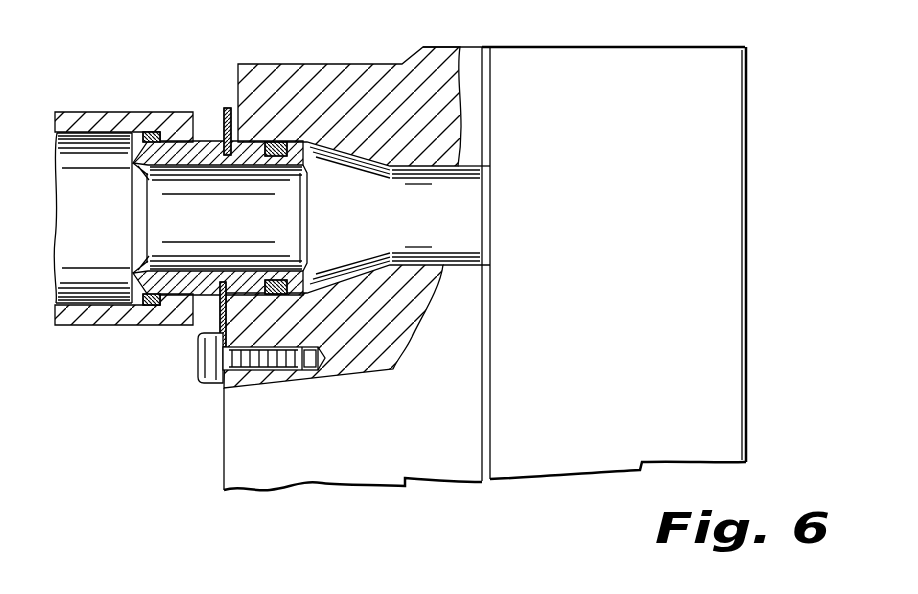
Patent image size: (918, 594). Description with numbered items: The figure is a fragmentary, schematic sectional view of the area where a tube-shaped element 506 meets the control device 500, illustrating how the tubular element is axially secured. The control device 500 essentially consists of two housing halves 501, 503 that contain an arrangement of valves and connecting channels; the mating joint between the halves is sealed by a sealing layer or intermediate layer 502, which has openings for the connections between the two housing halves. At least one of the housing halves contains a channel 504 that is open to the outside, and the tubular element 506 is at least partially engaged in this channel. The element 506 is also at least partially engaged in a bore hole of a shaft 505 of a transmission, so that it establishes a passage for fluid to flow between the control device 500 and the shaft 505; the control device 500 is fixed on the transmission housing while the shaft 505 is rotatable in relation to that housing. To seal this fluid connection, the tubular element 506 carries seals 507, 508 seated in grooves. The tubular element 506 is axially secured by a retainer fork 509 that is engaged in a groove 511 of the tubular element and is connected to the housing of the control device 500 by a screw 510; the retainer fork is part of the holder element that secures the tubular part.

The control device 500 is at (757, 108).
The housing half 501 is at (325, 465).
The sealing layer 502 is at (478, 457).
The housing half 503 is at (586, 457).
The channel 504 is at (402, 218).
The shaft 505 is at (72, 319).
The tubular element 506 is at (203, 141).
The seal 507 is at (151, 134).
The seal 508 is at (287, 140).
The retainer fork 509 is at (223, 108).
The screw 510 is at (212, 365).
The groove 511 is at (238, 282).